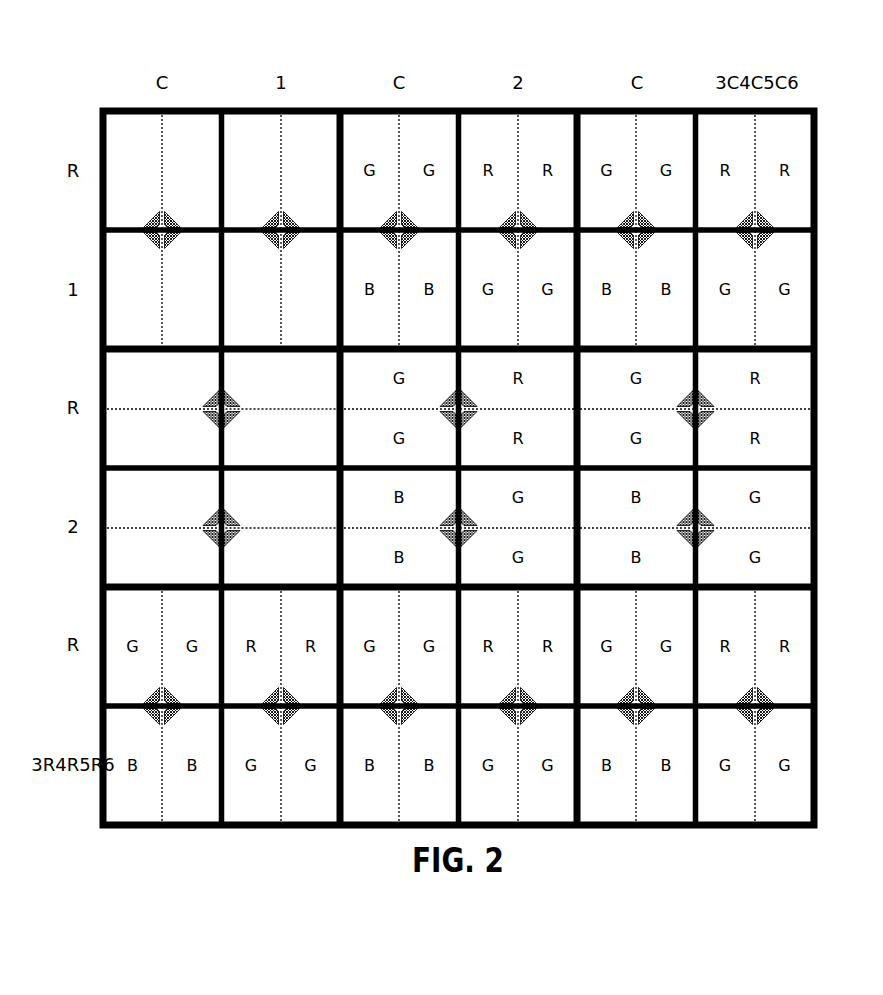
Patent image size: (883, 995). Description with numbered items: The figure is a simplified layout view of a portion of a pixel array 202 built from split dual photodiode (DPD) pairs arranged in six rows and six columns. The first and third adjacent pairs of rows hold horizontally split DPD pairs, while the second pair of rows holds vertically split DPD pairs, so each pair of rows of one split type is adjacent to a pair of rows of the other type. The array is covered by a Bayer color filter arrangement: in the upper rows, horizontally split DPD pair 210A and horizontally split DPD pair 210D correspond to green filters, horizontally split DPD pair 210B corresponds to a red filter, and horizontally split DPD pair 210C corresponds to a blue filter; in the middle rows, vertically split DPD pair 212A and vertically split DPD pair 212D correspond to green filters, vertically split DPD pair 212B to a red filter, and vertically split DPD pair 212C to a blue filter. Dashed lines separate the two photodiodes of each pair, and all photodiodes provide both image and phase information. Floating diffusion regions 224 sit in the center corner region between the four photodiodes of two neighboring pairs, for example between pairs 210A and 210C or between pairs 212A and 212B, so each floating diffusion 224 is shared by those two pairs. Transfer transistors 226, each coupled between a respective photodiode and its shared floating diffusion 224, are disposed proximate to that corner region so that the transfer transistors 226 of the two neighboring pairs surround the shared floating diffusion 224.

The pixel array 202 is at (816, 108).
The horizontally split DPD pair 210A is at (120, 130).
The horizontally split DPD pair 210B is at (305, 130).
The horizontally split DPD pair 210C is at (113, 262).
The horizontally split DPD pair 210D is at (325, 274).
The vertically split DPD pair 212A is at (113, 375).
The vertically split DPD pair 212B is at (313, 387).
The vertically split DPD pair 212C is at (113, 503).
The vertically split DPD pair 212D is at (327, 497).
The floating diffusion region 224 is at (151, 217).
The transfer transistor 226 is at (168, 243).